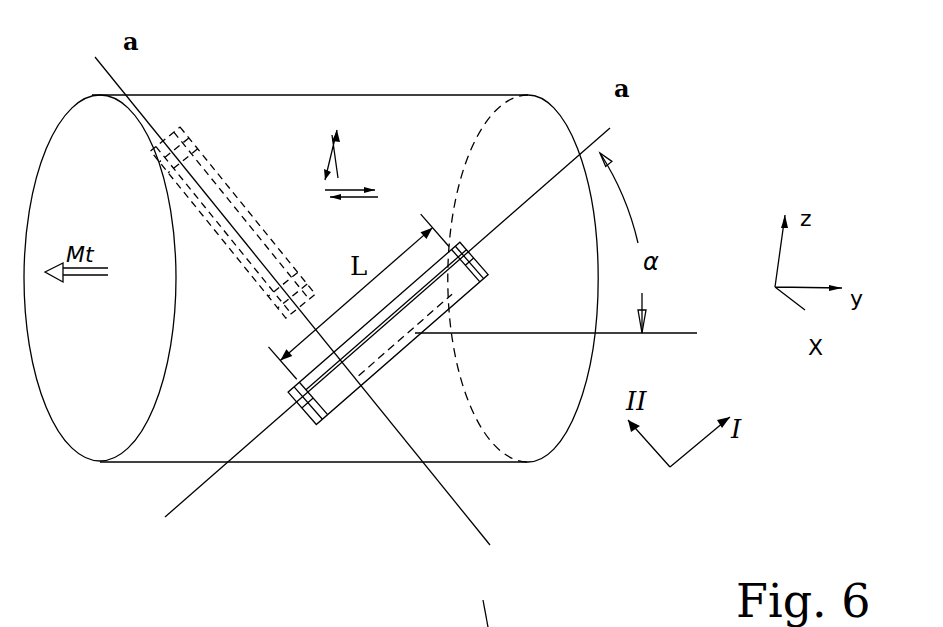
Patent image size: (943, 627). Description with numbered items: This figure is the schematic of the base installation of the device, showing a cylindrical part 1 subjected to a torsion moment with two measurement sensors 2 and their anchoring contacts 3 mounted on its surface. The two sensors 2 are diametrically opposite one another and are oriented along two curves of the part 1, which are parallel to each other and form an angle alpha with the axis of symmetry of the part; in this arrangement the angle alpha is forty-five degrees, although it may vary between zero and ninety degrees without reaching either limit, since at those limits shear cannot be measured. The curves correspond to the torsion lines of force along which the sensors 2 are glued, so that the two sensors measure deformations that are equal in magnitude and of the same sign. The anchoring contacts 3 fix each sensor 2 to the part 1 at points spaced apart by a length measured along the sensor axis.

The part 1 is at (452, 118).
The sensor 2 is at (243, 195).
The anchoring contact 3 is at (190, 143).